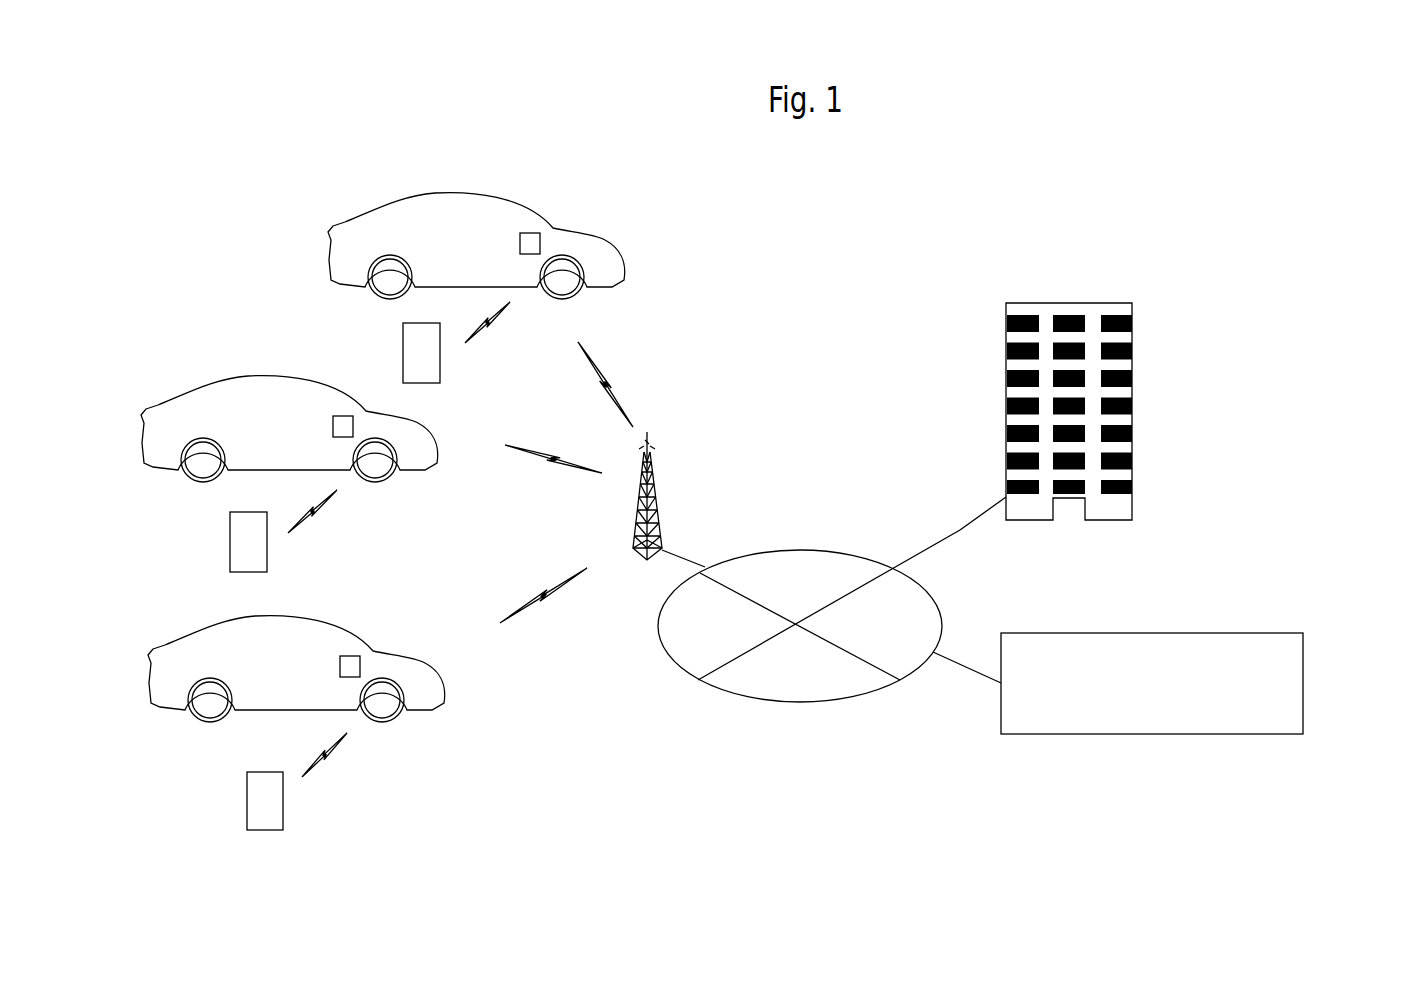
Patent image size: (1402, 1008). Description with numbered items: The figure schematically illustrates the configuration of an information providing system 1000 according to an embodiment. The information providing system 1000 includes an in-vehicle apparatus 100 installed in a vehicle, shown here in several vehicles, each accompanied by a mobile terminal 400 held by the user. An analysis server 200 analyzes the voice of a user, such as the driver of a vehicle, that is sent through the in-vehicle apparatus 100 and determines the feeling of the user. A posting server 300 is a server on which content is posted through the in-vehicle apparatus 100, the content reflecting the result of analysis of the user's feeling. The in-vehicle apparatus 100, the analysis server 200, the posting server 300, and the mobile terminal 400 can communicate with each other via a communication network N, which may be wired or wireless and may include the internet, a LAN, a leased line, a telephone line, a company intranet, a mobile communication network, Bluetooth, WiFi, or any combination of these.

The in-vehicle apparatus 100 is at (519, 240).
The mobile terminal 400 is at (441, 357).
The analysis server 200 is at (1133, 333).
The posting server 300 is at (1304, 683).
The information providing system 1000 is at (843, 272).
The communication network N is at (801, 549).